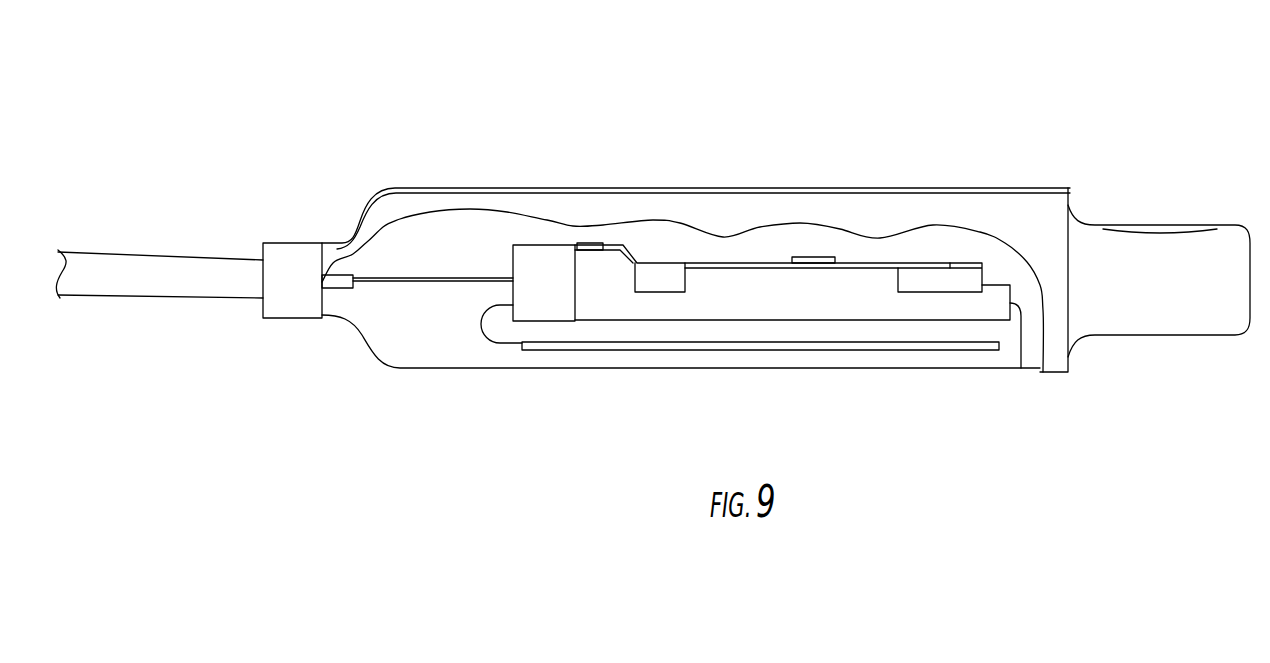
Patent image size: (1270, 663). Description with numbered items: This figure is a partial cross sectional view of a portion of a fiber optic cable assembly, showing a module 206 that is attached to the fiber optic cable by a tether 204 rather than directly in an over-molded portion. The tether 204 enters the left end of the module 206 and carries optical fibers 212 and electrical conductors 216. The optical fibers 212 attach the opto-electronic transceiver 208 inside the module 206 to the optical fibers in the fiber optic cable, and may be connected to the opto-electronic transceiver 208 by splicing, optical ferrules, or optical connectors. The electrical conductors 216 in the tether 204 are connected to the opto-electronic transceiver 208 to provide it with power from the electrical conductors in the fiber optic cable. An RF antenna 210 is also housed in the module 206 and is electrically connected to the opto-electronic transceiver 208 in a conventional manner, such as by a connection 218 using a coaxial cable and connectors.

The module 206 is at (963, 112).
The tether 204 is at (217, 298).
The optical fibers 212 is at (417, 277).
The electrical conductors 216 is at (420, 283).
The connection 218 is at (478, 334).
The RF antenna 210 is at (980, 350).
The opto-electronic transceiver 208 is at (1021, 368).